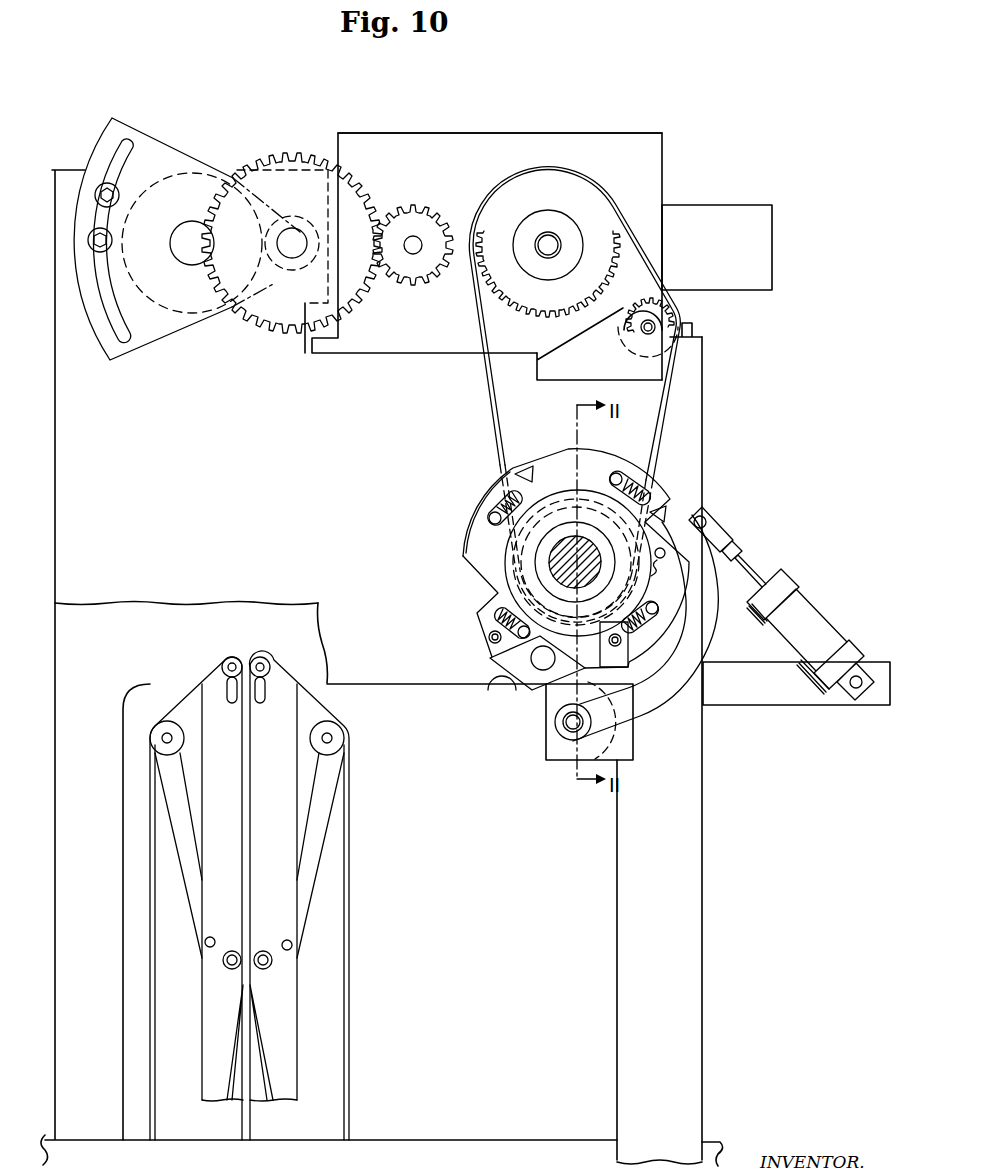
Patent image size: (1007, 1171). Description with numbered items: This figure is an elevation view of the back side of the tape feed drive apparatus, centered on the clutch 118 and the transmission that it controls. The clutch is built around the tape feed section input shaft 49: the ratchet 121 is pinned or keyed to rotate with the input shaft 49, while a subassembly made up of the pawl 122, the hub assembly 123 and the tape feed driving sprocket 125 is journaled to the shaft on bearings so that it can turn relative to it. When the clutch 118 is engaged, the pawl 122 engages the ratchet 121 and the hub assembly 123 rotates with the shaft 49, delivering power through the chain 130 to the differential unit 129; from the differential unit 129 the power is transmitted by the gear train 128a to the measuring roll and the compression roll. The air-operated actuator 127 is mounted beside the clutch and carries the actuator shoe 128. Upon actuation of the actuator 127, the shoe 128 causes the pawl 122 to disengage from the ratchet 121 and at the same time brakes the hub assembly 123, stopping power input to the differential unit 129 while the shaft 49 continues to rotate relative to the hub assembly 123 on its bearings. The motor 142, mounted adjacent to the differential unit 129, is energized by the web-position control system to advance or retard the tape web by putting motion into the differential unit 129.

The gear train 128a is at (216, 124).
The differential unit 129 is at (512, 140).
The motor 142 is at (748, 232).
The chain 130 is at (492, 372).
The clutch 118 is at (533, 575).
The tape feed driving sprocket 125 is at (568, 503).
The hub assembly 123 is at (476, 543).
The input shaft 49 is at (478, 592).
The ratchet 121 is at (545, 583).
The pawl 122 is at (500, 684).
The air-operated actuator 127 is at (817, 632).
The actuator shoe 128 is at (677, 690).